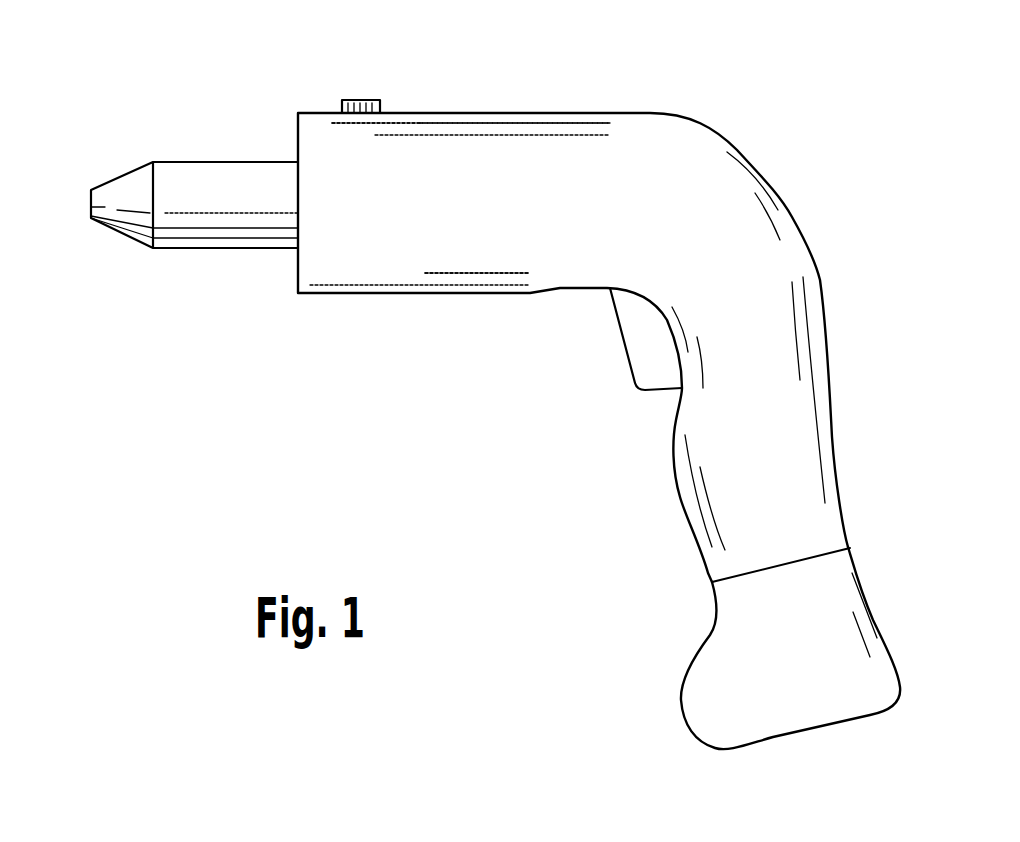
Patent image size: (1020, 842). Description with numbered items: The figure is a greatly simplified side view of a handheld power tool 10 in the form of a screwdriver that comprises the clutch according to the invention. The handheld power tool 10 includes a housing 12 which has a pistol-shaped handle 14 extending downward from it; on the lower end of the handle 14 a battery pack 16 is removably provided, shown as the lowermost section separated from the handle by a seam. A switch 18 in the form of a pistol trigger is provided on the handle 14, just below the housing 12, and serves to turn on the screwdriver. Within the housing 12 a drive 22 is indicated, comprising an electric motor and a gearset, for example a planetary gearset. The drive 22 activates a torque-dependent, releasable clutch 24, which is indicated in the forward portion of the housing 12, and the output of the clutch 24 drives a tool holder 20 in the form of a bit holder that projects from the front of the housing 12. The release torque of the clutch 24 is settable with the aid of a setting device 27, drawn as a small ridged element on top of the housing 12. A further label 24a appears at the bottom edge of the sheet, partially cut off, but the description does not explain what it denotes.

The handheld power tool 10 is at (774, 100).
The housing 12 is at (797, 253).
The handle 14 is at (798, 447).
The battery pack 16 is at (853, 595).
The switch 18 is at (652, 377).
The tool holder 20 is at (227, 178).
The drive 22 is at (605, 218).
The clutch 24 is at (376, 218).
The heating element 24a is at (477, 557).
The setting device 27 is at (358, 100).